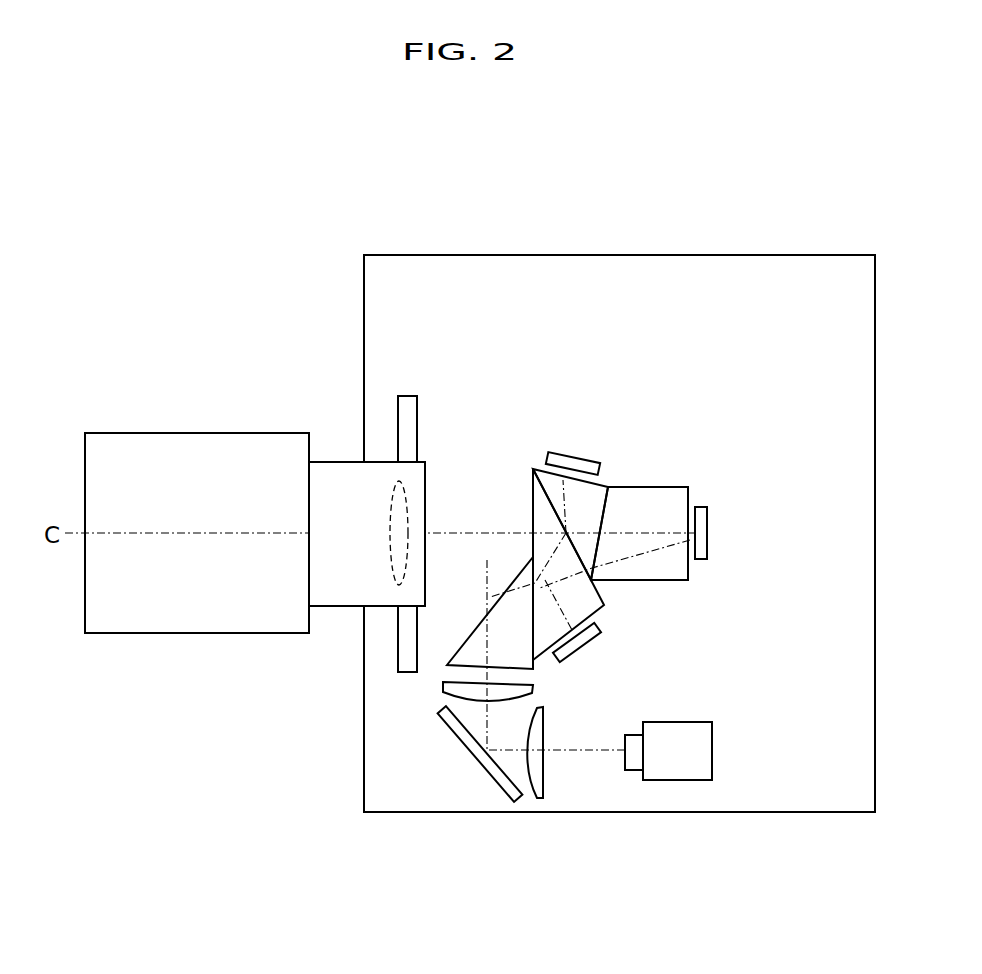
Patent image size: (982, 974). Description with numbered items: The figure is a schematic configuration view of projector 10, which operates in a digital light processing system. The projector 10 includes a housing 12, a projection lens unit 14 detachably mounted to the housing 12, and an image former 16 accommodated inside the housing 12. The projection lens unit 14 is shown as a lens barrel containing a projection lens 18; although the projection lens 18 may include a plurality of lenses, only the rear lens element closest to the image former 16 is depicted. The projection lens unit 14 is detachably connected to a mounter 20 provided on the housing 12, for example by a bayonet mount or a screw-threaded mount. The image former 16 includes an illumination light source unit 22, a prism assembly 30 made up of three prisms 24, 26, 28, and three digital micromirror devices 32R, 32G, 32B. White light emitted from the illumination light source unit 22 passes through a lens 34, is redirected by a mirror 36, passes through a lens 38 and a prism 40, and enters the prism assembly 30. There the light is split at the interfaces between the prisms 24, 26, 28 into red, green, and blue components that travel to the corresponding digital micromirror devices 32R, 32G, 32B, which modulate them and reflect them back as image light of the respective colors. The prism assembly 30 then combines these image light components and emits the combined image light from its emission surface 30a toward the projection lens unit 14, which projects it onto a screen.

The projector 10 is at (160, 383).
The housing 12 is at (851, 300).
The projection lens unit 14 is at (278, 453).
The image former 16 is at (777, 698).
The projection lens 18 is at (392, 495).
The mounter 20 is at (407, 395).
The illumination light source unit 22 is at (692, 761).
The prism 24 is at (530, 495).
The prism 26 is at (597, 493).
The prism 28 is at (675, 565).
The prism assembly 30 is at (658, 472).
The emission surface 30a is at (530, 502).
The digital micromirror device 32R is at (583, 460).
The digital micromirror device 32G is at (592, 638).
The digital micromirror device 32B is at (708, 517).
The lens 34 is at (538, 730).
The mirror 36 is at (445, 722).
The lens 38 is at (453, 683).
The prism 40 is at (475, 647).